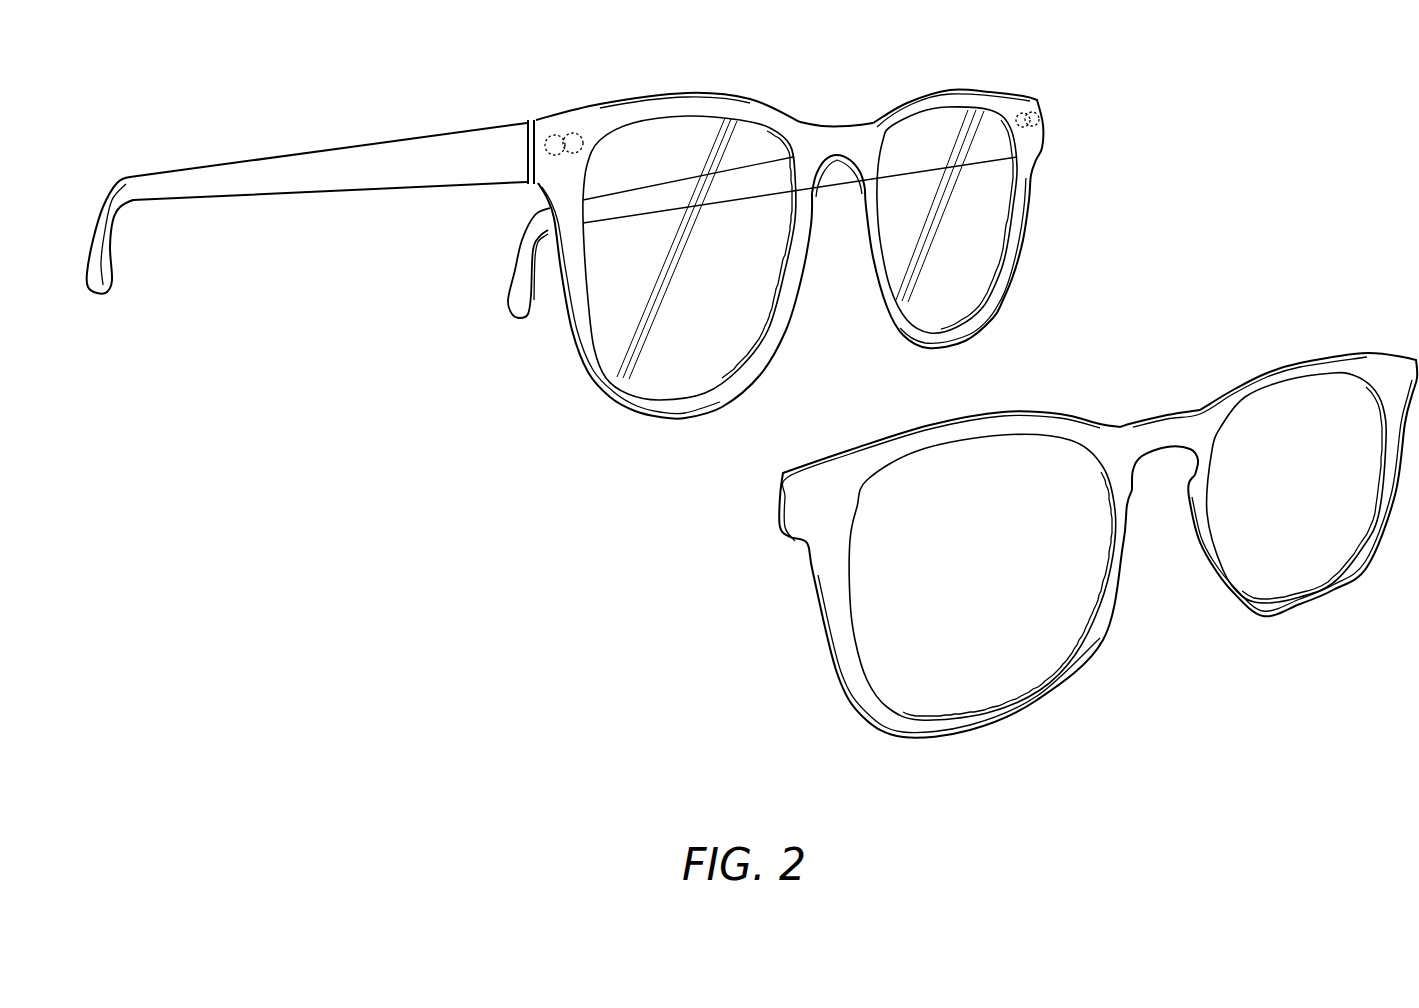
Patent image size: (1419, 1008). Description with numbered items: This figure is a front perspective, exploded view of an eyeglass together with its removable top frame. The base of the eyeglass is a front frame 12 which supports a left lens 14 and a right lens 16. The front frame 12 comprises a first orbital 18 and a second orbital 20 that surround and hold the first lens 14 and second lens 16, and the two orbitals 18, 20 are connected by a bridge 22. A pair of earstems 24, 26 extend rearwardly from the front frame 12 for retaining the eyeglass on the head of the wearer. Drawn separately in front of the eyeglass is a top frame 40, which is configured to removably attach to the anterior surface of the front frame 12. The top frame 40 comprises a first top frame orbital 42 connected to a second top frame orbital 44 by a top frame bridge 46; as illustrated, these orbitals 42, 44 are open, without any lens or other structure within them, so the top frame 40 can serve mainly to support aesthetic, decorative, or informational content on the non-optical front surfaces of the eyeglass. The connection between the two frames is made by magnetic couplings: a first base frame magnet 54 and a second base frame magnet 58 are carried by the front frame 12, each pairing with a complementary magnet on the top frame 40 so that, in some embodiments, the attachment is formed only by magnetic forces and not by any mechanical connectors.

The front frame 12 is at (594, 233).
The left lens 14 is at (987, 208).
The right lens 16 is at (752, 315).
The first orbital 18 is at (1007, 307).
The second orbital 20 is at (613, 385).
The bridge 22 is at (840, 142).
The earstem 24 is at (523, 279).
The earstem 26 is at (347, 168).
The first base frame magnet 54 is at (558, 133).
The second base frame magnet 58 is at (1027, 112).
The top frame 40 is at (1048, 544).
The first top frame orbital 42 is at (1320, 597).
The second top frame orbital 44 is at (1007, 708).
The top frame bridge 46 is at (1165, 438).